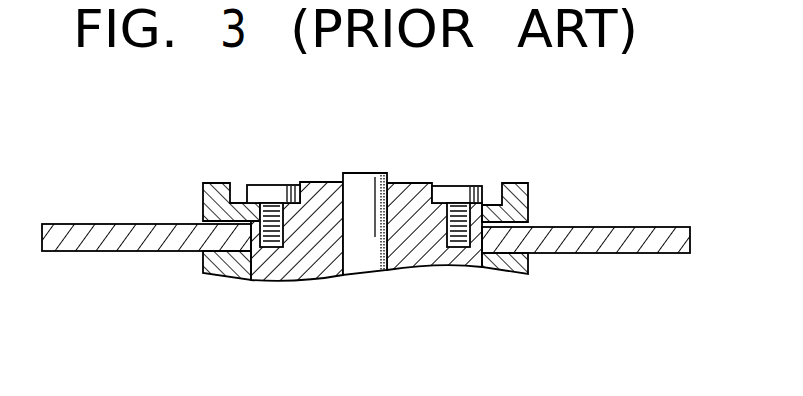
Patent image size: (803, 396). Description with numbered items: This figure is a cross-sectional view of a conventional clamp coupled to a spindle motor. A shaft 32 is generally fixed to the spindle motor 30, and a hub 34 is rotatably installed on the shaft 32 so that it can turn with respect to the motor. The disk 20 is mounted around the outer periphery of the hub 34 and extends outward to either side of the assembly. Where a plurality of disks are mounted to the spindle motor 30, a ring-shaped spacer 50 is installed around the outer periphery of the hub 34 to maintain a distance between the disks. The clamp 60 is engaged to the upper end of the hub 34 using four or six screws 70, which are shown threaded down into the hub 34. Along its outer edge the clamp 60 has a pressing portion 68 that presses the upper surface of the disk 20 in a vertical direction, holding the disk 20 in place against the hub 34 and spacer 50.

The disk 20 is at (637, 232).
The spindle motor 30 is at (366, 242).
The shaft 32 is at (363, 192).
The hub 34 is at (417, 265).
The spacer 50 is at (528, 270).
The clamp 60 is at (401, 188).
The pressing portion 68 is at (212, 183).
The screws 70 is at (272, 186).